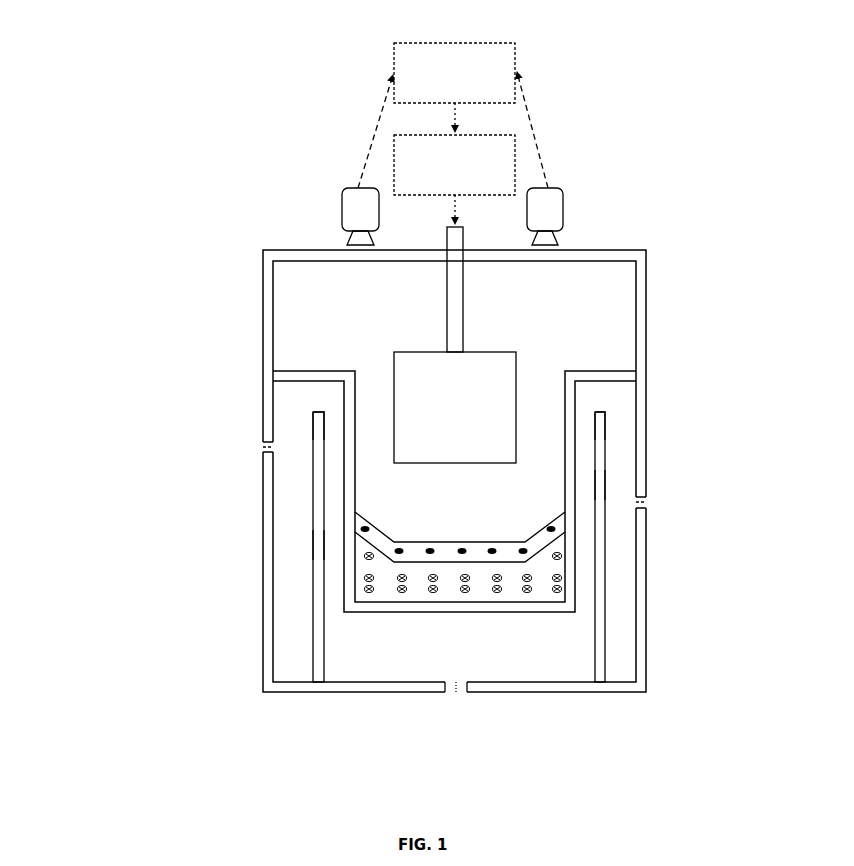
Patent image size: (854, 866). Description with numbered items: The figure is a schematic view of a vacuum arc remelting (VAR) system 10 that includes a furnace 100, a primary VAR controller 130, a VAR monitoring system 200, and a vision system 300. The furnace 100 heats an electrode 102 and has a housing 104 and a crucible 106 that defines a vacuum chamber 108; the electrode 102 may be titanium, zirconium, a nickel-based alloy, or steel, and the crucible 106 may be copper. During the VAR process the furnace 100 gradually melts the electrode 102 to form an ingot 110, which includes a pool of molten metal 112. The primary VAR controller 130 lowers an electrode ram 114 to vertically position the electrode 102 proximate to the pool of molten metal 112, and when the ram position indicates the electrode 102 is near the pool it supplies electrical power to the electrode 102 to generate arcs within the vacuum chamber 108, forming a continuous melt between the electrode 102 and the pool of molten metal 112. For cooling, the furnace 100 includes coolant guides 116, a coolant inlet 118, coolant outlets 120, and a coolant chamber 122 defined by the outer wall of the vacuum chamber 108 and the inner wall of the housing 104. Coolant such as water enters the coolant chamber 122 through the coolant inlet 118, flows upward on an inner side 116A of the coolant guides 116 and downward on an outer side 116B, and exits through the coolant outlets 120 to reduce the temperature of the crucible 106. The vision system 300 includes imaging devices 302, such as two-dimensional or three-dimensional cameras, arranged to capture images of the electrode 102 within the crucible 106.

The VAR system 10 is at (275, 67).
The vision system 300 is at (122, 125).
The furnace 100 is at (222, 293).
The housing 104 is at (285, 250).
The imaging devices 302 is at (355, 188).
The VAR monitoring system 200 is at (516, 52).
The primary VAR controller 130 is at (516, 152).
The electrode ram 114 is at (447, 240).
The electrode 102 is at (516, 352).
The crucible 106 is at (605, 371).
The coolant guides 116 is at (315, 518).
The inner side of the coolant guides 116A is at (325, 430).
The outer side of the coolant guides 116B is at (313, 547).
The coolant outlets 120 is at (252, 440).
The vacuum chamber 108 is at (540, 488).
The ingot 110 is at (540, 540).
The pool of molten metal 112 is at (362, 565).
The coolant chamber 122 is at (364, 660).
The coolant inlet 118 is at (454, 710).